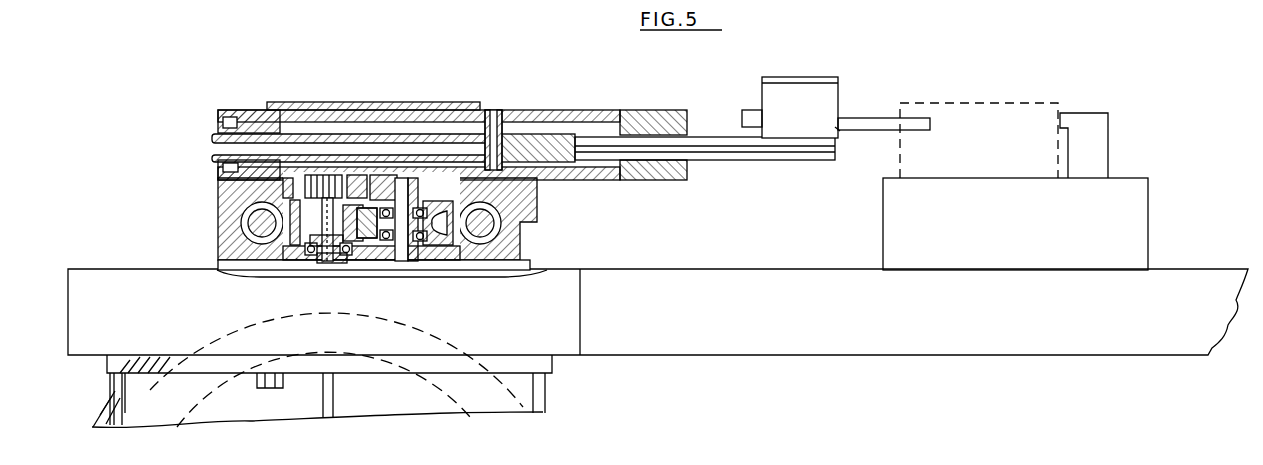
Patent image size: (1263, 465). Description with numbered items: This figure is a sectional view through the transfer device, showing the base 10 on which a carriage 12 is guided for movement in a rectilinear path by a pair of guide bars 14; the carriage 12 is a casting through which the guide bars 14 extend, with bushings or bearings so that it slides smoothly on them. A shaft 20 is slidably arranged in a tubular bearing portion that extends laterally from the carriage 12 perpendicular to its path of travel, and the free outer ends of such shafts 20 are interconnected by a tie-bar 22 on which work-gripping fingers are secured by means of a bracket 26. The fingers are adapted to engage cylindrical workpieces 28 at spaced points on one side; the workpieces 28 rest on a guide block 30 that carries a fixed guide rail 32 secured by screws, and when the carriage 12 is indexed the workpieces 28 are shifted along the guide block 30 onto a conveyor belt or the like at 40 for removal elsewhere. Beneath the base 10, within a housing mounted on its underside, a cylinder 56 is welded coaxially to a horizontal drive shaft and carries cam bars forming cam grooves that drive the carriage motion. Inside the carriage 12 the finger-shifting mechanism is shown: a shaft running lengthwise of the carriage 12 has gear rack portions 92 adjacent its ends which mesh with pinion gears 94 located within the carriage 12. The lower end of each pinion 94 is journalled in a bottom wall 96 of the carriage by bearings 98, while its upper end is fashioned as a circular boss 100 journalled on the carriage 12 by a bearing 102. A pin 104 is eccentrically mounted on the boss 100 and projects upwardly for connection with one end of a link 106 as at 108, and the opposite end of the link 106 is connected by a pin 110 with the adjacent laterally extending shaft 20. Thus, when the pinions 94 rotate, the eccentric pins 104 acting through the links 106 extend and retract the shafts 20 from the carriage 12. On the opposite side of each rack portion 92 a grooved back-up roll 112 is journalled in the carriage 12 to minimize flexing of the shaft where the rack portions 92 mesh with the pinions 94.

The base 10 is at (105, 264).
The carriage 12 is at (540, 107).
The guide bars 14 is at (250, 230).
The shaft 20 is at (748, 150).
The tie-bar 22 is at (835, 131).
The bracket 26 is at (765, 97).
The cylindrical workpieces 28 is at (948, 100).
The guide block 30 is at (1031, 262).
The guide rail 32 is at (1087, 117).
The conveyor belt 40 is at (873, 120).
The cylinder 56 is at (190, 417).
The gear rack portions 92 is at (400, 245).
The pinion gears 94 is at (300, 245).
The bottom wall 96 is at (376, 250).
The bearings 98 is at (353, 263).
The circular boss 100 is at (315, 173).
The bearing 102 is at (290, 183).
The pin 104 is at (367, 172).
The link 106 is at (380, 175).
The connection 108 is at (352, 170).
The pin 110 is at (493, 150).
The grooved back-up roll 112 is at (433, 233).